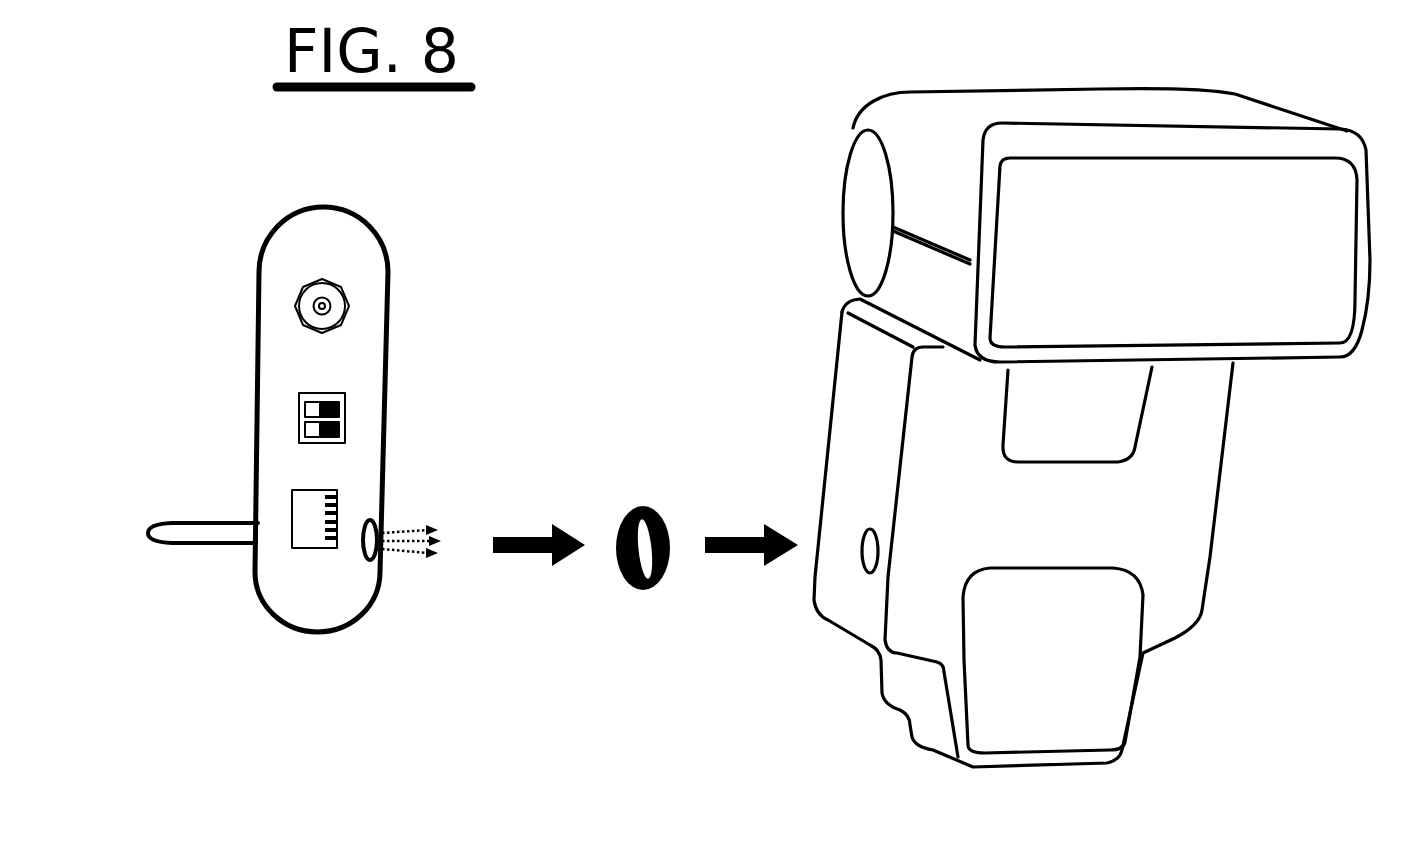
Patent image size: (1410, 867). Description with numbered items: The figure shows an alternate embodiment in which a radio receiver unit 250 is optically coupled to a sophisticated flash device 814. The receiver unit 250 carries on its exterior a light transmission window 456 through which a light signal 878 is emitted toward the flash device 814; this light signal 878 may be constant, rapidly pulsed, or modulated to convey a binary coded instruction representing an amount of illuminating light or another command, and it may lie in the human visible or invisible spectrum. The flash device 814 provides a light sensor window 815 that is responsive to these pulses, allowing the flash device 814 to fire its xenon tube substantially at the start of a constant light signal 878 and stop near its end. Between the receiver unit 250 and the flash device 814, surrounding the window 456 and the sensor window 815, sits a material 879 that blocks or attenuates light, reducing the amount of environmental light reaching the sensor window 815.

The receiver unit 250 is at (250, 630).
The light transmission window 456 is at (355, 575).
The light signal 878 is at (400, 566).
The light blocking material 879 is at (637, 612).
The sophisticated flash device 814 is at (1237, 620).
The light sensor window 815 is at (853, 590).